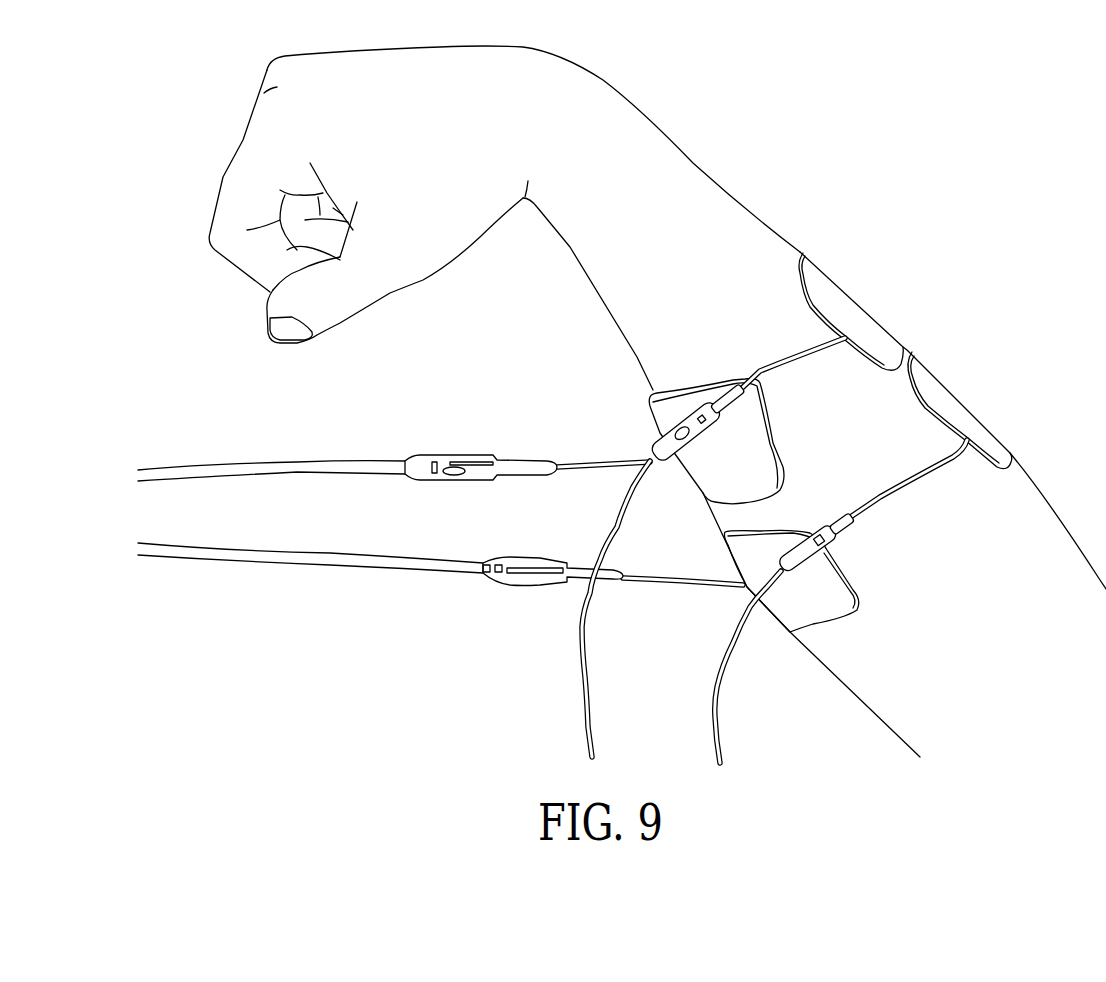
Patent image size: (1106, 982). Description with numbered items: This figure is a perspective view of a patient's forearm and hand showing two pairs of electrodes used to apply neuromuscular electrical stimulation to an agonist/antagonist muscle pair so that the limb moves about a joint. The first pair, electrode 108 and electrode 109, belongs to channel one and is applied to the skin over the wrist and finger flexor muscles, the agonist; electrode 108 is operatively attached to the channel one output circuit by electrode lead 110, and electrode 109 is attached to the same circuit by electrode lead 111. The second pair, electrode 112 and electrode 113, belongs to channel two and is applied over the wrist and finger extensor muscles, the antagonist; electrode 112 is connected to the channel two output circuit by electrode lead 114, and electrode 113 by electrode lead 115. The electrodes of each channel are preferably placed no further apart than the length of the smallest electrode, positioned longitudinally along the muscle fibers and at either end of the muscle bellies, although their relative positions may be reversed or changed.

The electrode 108 is at (783, 445).
The electrode 109 is at (857, 578).
The electrode lead 110 is at (363, 458).
The electrode lead 111 is at (348, 552).
The electrode 112 is at (887, 310).
The electrode 113 is at (983, 407).
The electrode lead 114 is at (630, 522).
The electrode lead 115 is at (738, 652).